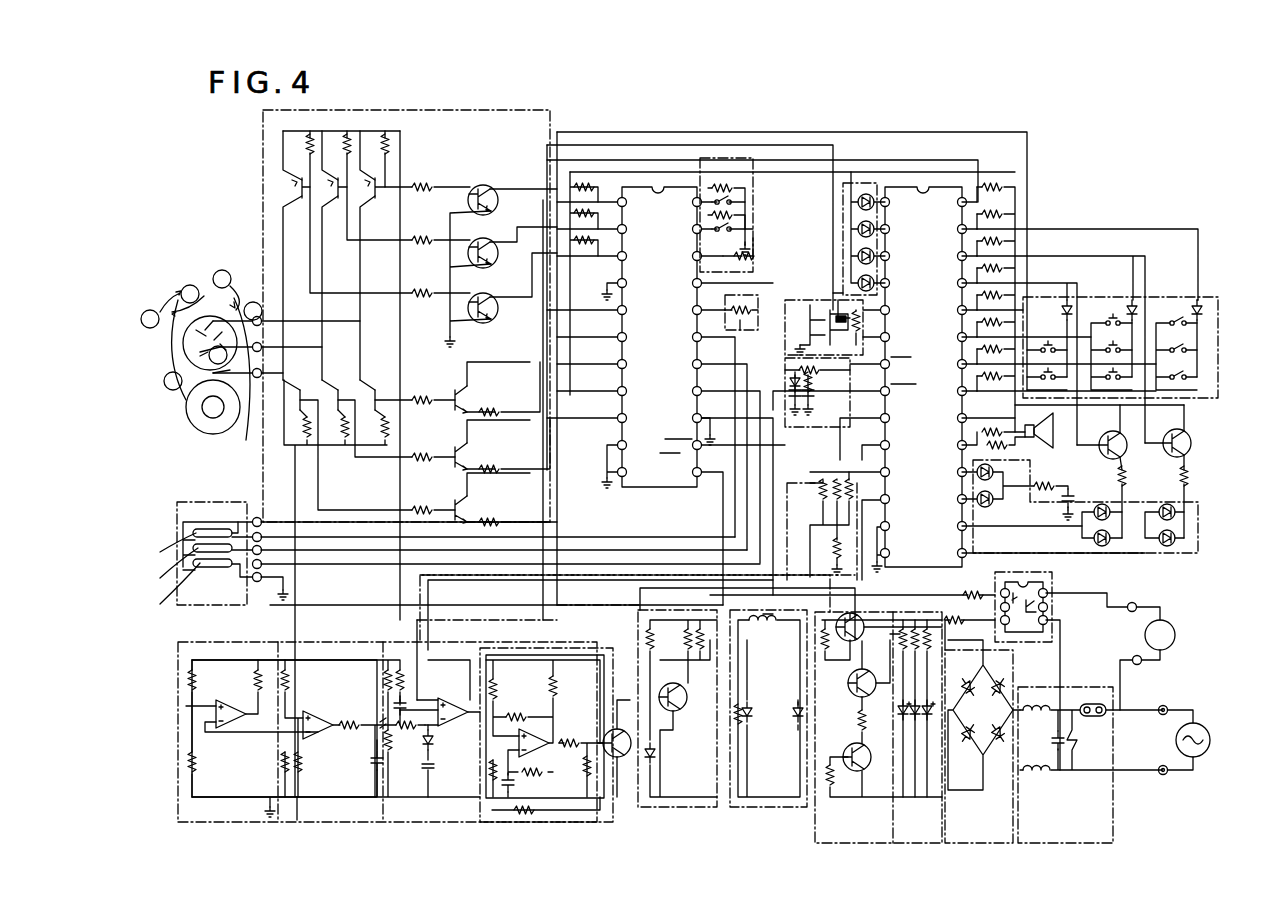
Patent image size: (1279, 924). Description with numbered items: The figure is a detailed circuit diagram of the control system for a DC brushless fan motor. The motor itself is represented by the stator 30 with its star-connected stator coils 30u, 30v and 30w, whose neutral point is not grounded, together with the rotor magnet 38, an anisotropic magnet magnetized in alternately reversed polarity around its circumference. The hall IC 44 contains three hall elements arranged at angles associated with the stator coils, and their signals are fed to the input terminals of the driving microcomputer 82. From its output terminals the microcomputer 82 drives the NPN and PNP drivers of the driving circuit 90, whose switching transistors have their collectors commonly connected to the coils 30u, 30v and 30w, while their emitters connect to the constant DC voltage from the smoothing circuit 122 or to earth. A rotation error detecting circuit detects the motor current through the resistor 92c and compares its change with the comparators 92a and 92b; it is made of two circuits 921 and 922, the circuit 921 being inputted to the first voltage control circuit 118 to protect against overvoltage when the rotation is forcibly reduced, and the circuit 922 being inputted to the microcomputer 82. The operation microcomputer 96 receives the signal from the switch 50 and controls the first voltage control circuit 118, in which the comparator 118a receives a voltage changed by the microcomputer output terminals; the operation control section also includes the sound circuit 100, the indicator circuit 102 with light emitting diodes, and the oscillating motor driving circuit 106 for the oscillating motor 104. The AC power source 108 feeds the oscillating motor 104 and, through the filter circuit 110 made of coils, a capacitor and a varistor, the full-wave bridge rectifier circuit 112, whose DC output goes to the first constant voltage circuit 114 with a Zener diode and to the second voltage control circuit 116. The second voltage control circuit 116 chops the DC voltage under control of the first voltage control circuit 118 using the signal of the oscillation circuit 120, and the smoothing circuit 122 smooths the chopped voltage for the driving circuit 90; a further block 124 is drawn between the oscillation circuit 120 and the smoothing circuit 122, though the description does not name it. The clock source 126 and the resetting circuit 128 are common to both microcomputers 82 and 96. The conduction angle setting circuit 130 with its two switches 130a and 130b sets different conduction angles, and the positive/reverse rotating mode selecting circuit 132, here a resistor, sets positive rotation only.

The stator 30 is at (207, 320).
The stator coil 30u is at (205, 333).
The stator coil 30v is at (200, 352).
The stator coil 30w is at (246, 385).
The rotor magnet 38 is at (197, 422).
The hall IC 44 is at (215, 502).
The switch 50 is at (1218, 346).
The microcomputer 82 is at (660, 487).
The driving circuit 90 is at (450, 110).
The comparator 92a is at (325, 712).
The comparator 92b is at (240, 707).
The resistor 92c is at (305, 768).
The circuit 921 is at (345, 822).
The circuit 922 is at (252, 817).
The microcomputer 96 is at (945, 187).
The sound circuit 100 is at (1053, 442).
The indicator circuit 102 is at (1198, 540).
The oscillating motor 104 is at (1175, 635).
The oscillating motor driving circuit 106 is at (1052, 612).
The AC power source 108 is at (1210, 740).
The filter circuit 110 is at (1113, 825).
The rectifier circuit 112 is at (985, 843).
The first constant voltage circuit 114 is at (925, 843).
The second voltage control circuit 116 is at (870, 843).
The first voltage control circuit 118 is at (614, 760).
The comparator 118a is at (458, 699).
The oscillation circuit 120 is at (570, 822).
The smoothing circuit 122 is at (783, 808).
The switching circuit 124 is at (685, 808).
The clock source 126 is at (800, 300).
The resetting circuit 128 is at (817, 408).
The conduction angle setting circuit 130 is at (737, 158).
The switch 130a is at (726, 198).
The switch 130b is at (728, 226).
The positive/reverse rotating mode selecting circuit 132 is at (748, 328).